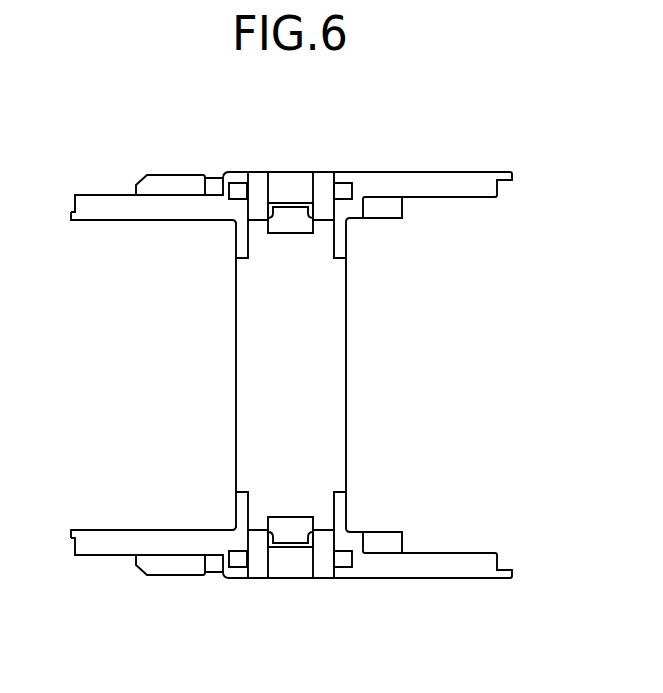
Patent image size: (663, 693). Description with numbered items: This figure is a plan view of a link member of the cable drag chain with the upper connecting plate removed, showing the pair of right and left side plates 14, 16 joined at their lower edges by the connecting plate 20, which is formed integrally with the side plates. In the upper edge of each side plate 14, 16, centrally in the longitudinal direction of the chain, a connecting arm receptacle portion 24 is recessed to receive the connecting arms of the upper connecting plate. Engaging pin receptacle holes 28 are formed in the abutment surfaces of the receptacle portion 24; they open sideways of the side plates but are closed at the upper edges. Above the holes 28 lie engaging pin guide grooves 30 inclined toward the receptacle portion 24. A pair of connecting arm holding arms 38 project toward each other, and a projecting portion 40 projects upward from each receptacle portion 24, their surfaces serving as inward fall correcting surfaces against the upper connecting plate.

The side plate 14 is at (387, 582).
The side plate 16 is at (414, 170).
The connecting plate 20 is at (332, 362).
The connecting arm receptacle portion 24 is at (257, 182).
The engaging pin receptacle hole 28 is at (243, 188).
The engaging pin guide groove 30 is at (236, 568).
The connecting arm holding arm 38 is at (240, 262).
The projecting portion 40 is at (288, 234).